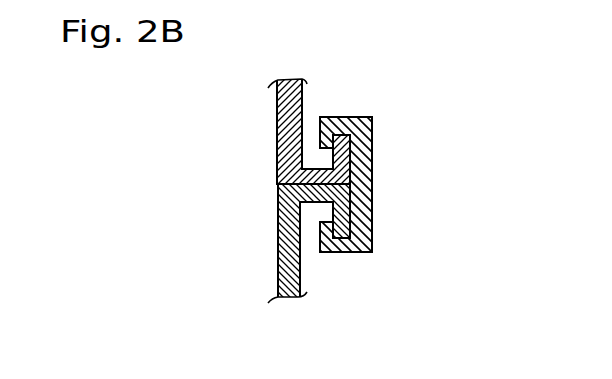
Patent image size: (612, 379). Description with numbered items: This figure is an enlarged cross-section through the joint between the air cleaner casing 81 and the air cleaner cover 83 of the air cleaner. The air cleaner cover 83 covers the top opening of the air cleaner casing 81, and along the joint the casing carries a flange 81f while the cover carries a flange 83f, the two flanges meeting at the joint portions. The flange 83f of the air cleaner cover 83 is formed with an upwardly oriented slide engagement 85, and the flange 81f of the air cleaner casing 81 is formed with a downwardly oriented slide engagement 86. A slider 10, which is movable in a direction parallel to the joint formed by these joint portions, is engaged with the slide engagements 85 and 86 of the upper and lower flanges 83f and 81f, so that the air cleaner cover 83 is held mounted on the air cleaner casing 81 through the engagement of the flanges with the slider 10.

The slider 10 is at (372, 180).
The air cleaner casing 81 is at (300, 280).
The flange of the air cleaner casing 81f is at (320, 204).
The air cleaner cover 83 is at (300, 100).
The flange of the air cleaner cover 83f is at (320, 166).
The upwardly oriented slide engagement 85 is at (372, 145).
The downwardly oriented slide engagement 86 is at (372, 232).